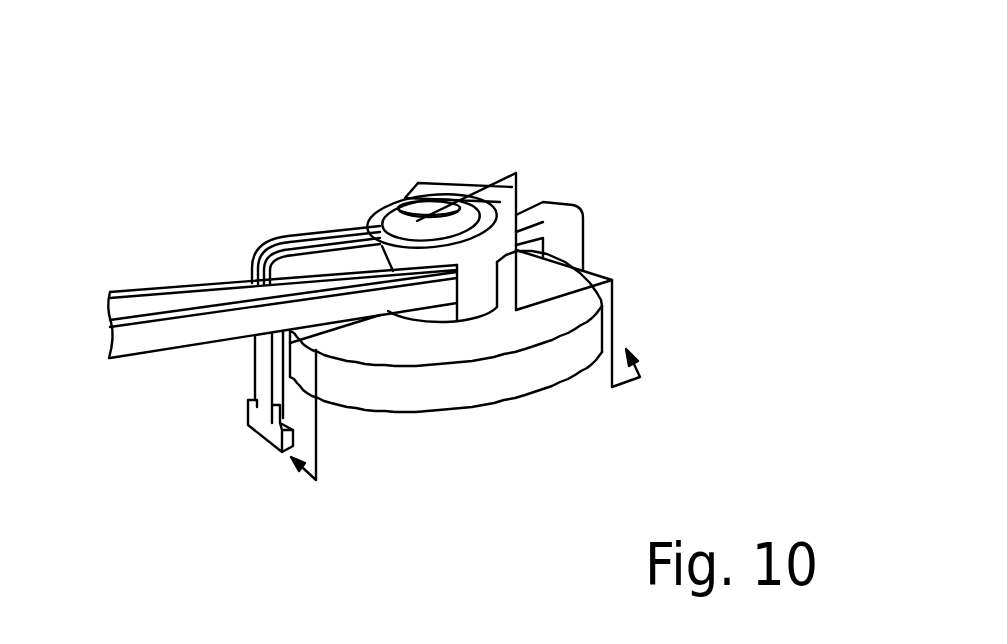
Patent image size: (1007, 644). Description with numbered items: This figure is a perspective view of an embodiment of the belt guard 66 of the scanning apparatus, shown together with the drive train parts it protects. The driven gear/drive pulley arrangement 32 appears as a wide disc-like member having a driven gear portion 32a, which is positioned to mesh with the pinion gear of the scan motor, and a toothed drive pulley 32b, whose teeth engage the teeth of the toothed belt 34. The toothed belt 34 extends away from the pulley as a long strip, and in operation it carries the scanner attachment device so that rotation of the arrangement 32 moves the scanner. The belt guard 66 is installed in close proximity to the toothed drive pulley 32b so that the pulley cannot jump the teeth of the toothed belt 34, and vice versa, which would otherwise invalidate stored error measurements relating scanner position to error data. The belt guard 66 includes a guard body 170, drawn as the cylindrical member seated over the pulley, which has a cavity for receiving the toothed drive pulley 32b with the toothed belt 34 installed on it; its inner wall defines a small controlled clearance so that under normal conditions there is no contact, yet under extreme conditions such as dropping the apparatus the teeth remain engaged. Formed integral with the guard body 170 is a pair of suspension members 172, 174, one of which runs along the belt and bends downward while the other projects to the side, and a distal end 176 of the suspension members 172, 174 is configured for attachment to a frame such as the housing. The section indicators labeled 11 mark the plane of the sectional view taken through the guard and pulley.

The section line 11- 11 is at (461, 374).
The driven gear/drive pulley arrangement 32 is at (723, 325).
The driven gear portion 32a is at (490, 379).
The toothed drive pulley 32b is at (447, 312).
The toothed belt 34 is at (150, 287).
The belt guard 66 is at (477, 124).
The guard body 170 is at (392, 200).
The suspension member 172 is at (250, 280).
The suspension member 174 is at (584, 231).
The distal end 176 is at (200, 440).